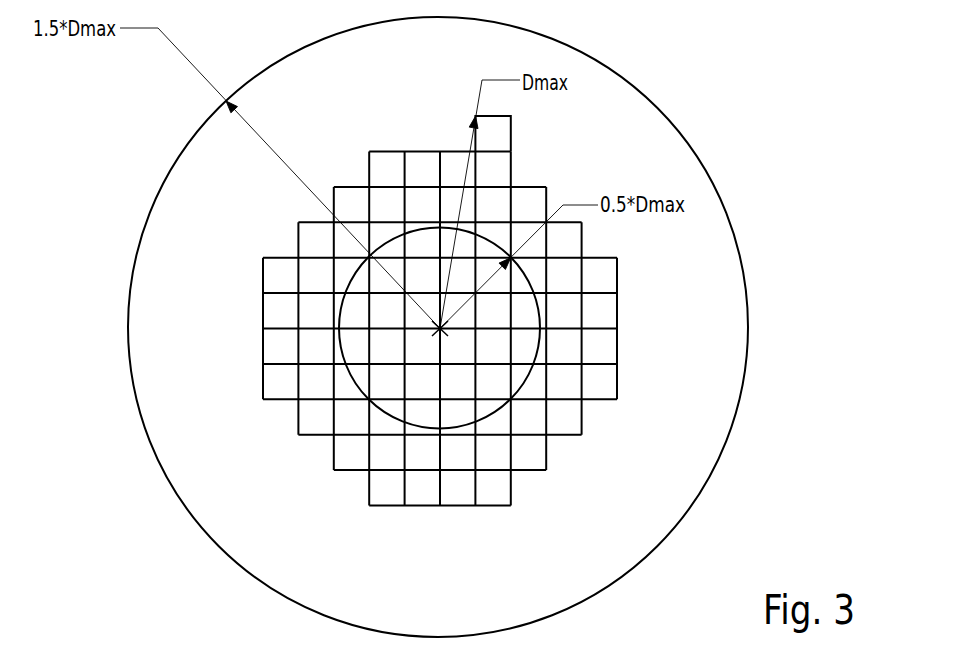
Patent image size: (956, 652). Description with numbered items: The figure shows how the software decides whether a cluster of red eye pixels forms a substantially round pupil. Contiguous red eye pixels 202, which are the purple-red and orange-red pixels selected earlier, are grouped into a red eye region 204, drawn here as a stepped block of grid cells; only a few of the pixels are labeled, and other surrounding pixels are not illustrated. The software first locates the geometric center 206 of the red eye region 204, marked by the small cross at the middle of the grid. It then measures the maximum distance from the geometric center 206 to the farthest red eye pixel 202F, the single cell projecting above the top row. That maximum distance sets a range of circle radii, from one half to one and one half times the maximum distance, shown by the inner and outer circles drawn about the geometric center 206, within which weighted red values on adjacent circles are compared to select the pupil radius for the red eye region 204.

The red eye pixels 202 is at (511, 170).
The farthest red eye pixel 202F is at (511, 133).
The red eye region 204 is at (473, 305).
The geometric center 206 is at (437, 330).